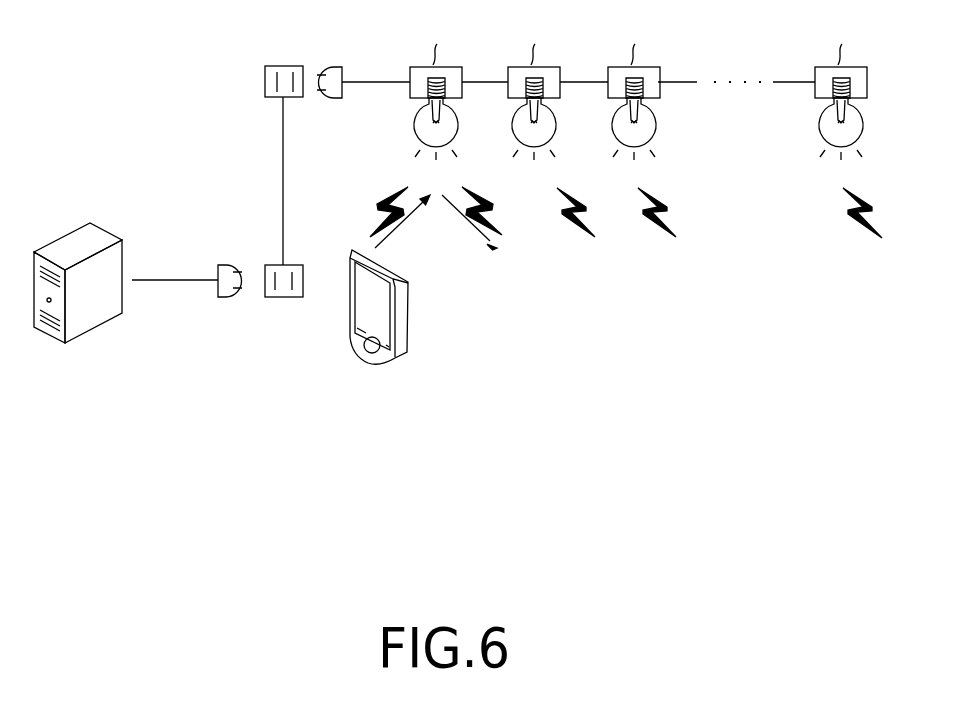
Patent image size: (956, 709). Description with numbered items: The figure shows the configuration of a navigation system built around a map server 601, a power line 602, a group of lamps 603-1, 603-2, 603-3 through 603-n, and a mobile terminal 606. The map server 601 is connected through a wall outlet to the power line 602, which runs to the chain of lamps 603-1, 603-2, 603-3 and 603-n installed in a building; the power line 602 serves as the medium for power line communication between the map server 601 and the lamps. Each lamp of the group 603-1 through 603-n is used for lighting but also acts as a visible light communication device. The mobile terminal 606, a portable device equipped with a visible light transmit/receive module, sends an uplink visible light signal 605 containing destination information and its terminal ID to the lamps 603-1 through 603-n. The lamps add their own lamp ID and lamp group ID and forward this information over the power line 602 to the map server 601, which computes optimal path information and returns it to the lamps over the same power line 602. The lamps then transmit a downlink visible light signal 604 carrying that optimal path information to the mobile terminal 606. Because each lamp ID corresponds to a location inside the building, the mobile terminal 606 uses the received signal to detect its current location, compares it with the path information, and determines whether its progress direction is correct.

The map server 601 is at (58, 236).
The power line 602 is at (284, 181).
The lamp 603-1 is at (453, 85).
The lamp 603-2 is at (551, 85).
The lamp 603-3 is at (651, 85).
The lamp 603-n is at (862, 85).
The visible light signal 604 is at (497, 220).
The visible light signal 605 is at (403, 220).
The mobile terminal 606 is at (408, 313).